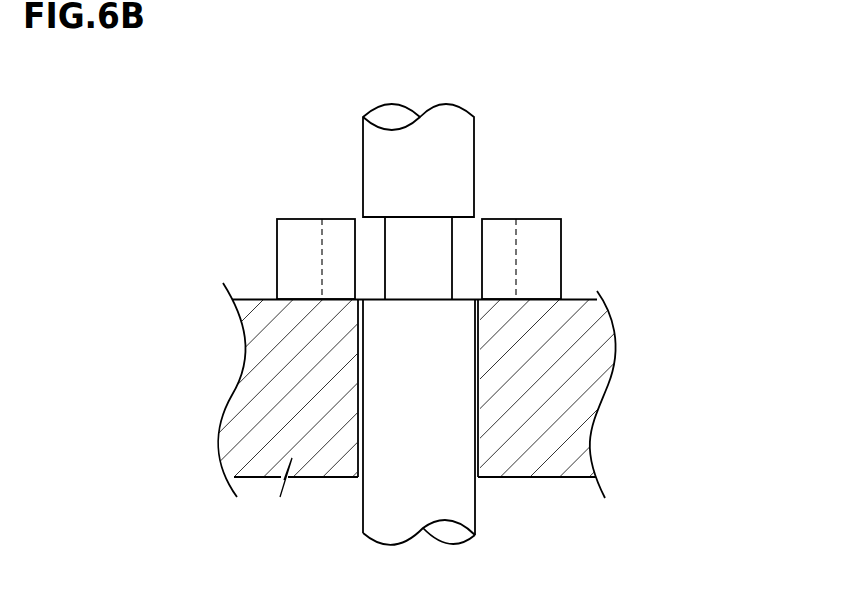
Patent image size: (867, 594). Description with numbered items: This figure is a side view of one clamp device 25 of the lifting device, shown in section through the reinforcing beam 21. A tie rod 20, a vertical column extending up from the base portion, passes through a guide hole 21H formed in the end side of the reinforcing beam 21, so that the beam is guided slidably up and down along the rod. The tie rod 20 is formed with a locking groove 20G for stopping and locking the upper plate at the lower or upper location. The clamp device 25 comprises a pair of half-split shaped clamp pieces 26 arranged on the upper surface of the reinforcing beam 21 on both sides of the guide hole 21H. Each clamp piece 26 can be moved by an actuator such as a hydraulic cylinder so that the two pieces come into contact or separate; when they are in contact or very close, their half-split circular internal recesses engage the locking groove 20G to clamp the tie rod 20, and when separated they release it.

The tie rod 20 is at (475, 167).
The locking groove 20G is at (452, 259).
The reinforcing beam 21 is at (568, 367).
The guide hole 21H is at (478, 422).
The clamp device 25 is at (552, 200).
The clamp piece 26 is at (288, 258).